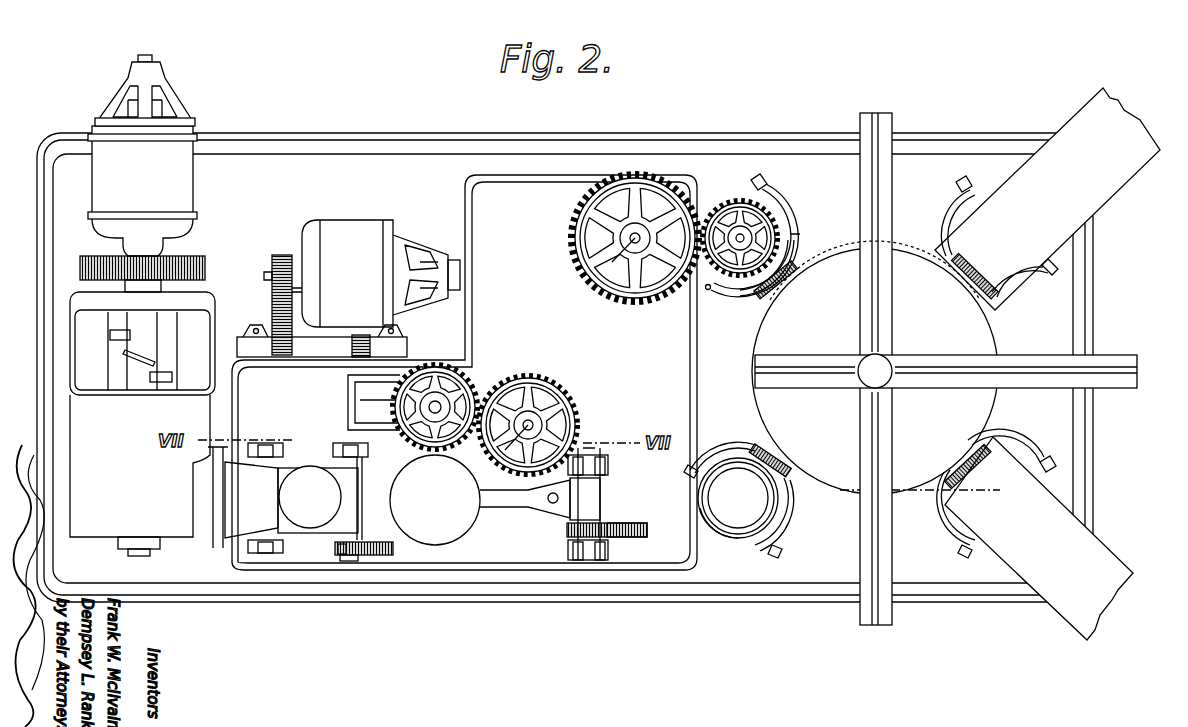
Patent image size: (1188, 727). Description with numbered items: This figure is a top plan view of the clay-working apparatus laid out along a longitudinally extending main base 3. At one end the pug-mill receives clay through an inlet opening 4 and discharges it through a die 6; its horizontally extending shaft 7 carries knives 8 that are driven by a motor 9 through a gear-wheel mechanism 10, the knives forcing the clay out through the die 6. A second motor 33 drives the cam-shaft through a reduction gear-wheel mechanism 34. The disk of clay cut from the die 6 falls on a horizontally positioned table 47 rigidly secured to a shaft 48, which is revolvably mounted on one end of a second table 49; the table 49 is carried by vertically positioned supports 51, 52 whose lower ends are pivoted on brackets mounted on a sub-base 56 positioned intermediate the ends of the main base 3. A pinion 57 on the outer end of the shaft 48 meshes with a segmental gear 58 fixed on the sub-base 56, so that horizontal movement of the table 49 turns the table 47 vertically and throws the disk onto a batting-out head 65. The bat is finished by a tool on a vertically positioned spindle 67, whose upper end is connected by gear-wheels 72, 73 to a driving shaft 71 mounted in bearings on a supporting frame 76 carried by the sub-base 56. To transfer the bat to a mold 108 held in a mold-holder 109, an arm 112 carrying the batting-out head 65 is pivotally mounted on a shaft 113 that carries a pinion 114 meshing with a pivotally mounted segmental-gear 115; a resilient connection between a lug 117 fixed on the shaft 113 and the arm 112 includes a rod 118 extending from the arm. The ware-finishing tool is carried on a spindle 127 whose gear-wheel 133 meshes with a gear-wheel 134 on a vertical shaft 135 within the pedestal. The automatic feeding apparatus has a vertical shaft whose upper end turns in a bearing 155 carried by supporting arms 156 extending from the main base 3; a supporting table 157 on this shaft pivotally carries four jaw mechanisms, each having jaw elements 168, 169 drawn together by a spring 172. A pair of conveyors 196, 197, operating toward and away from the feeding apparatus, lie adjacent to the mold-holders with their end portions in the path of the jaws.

The main base 3 is at (290, 158).
The inlet opening 4 is at (205, 325).
The die 6 is at (243, 497).
The shaft 7 is at (161, 359).
The knives 8 is at (128, 353).
The motor 9 is at (182, 186).
The gear-wheel mechanism 10 is at (198, 258).
The motor 33 is at (348, 230).
The reduction gear-wheel mechanism 34 is at (298, 305).
The table 47 is at (310, 497).
The shaft 48 is at (349, 561).
The second table 49 is at (288, 470).
The vertical supports 51 is at (272, 447).
The vertical supports 52 is at (362, 460).
The sub-base 56 is at (698, 352).
The pinion 57 is at (337, 548).
The segmental gear 58 is at (393, 550).
The batting-out head 65 is at (435, 500).
The spindle 67 is at (515, 443).
The driving shaft 71 is at (452, 398).
The gear-wheel 72 is at (379, 406).
The gear-wheel 73 is at (560, 388).
The supporting frame 76 is at (360, 410).
The mold 108 is at (738, 498).
The mold-holder 109 is at (728, 532).
The arm 112 is at (508, 503).
The shaft 113 is at (600, 450).
The pinion 114 is at (566, 530).
The segmental-gear 115 is at (648, 530).
The lug 117 is at (590, 493).
The rod 118 is at (548, 496).
The spindle 127 is at (740, 230).
The gear-wheel 133 is at (775, 200).
The gear-wheel 134 is at (616, 259).
The vertical shaft 135 is at (575, 236).
The bearing 155 is at (860, 370).
The supporting arms 156 is at (860, 292).
The supporting table 157 is at (905, 258).
The jaw element 168 is at (797, 232).
The jaw element 169 is at (745, 292).
The spring 172 is at (772, 293).
The conveyor 196 is at (1090, 540).
The conveyor 197 is at (1080, 132).